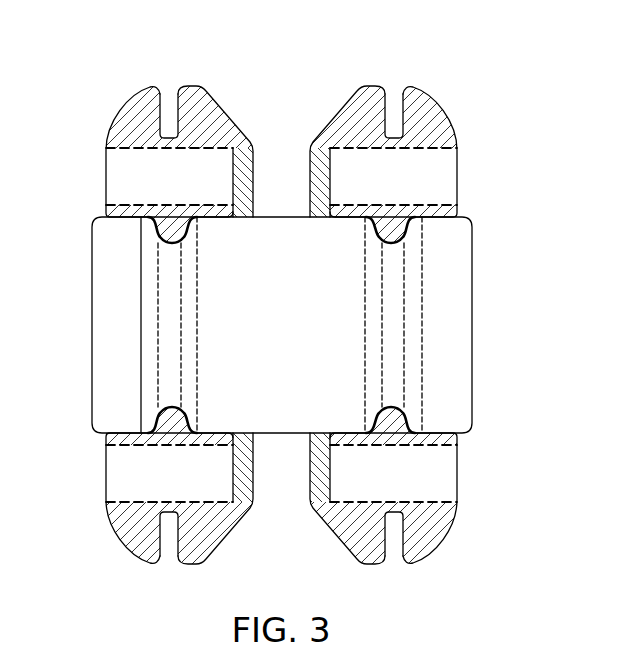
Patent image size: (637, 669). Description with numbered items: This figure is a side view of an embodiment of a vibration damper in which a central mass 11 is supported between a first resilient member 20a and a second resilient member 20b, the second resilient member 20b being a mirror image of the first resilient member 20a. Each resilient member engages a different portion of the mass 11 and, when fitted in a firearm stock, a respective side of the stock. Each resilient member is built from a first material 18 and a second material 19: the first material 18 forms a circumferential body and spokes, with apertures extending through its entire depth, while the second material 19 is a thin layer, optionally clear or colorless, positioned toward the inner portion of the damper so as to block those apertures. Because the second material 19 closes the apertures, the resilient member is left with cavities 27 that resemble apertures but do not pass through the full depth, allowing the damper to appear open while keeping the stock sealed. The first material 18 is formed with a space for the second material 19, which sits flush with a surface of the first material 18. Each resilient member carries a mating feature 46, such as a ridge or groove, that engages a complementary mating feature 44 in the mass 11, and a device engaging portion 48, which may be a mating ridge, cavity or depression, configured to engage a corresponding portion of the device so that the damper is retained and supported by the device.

The mass 11 is at (472, 308).
The first material 18 is at (181, 315).
The second material 19 is at (254, 158).
The first resilient member 20a is at (193, 87).
The second resilient member 20b is at (368, 87).
The cavity 27 is at (409, 312).
The complementary mating feature 44 is at (167, 407).
The mating feature 46 is at (153, 432).
The device engaging portion 48 is at (397, 117).